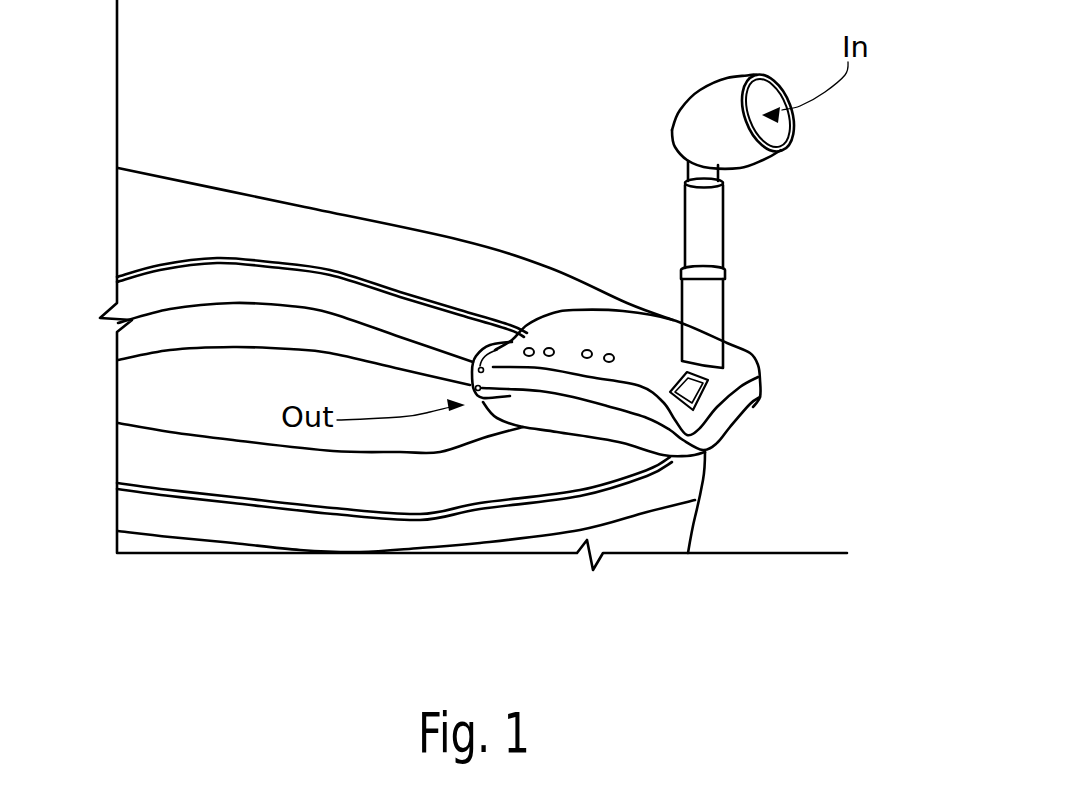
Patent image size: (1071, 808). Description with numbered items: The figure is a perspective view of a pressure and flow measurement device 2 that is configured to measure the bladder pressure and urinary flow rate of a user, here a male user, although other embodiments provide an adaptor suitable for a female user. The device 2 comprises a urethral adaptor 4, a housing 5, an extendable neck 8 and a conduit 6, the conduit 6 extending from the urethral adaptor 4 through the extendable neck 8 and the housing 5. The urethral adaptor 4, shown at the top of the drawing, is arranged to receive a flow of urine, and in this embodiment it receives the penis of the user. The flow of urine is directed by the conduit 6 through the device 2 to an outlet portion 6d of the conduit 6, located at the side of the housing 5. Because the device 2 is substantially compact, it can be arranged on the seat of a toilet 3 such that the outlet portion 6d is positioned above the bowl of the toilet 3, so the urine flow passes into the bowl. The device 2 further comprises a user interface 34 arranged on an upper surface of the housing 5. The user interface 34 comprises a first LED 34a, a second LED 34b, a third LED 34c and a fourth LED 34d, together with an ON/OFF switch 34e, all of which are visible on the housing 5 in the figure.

The pressure and flow measurement device 2 is at (858, 230).
The toilet 3 is at (297, 140).
The urethral adaptor 4 is at (713, 117).
The housing 5 is at (733, 350).
The conduit 6 is at (690, 173).
The outlet portion 6d is at (480, 377).
The extendable neck 8 is at (707, 248).
The user interface 34 is at (650, 380).
The first LED 34a is at (529, 357).
The second LED 34b is at (549, 357).
The third LED 34c is at (587, 360).
The fourth LED 34d is at (609, 363).
The ON/OFF switch 34e is at (693, 393).